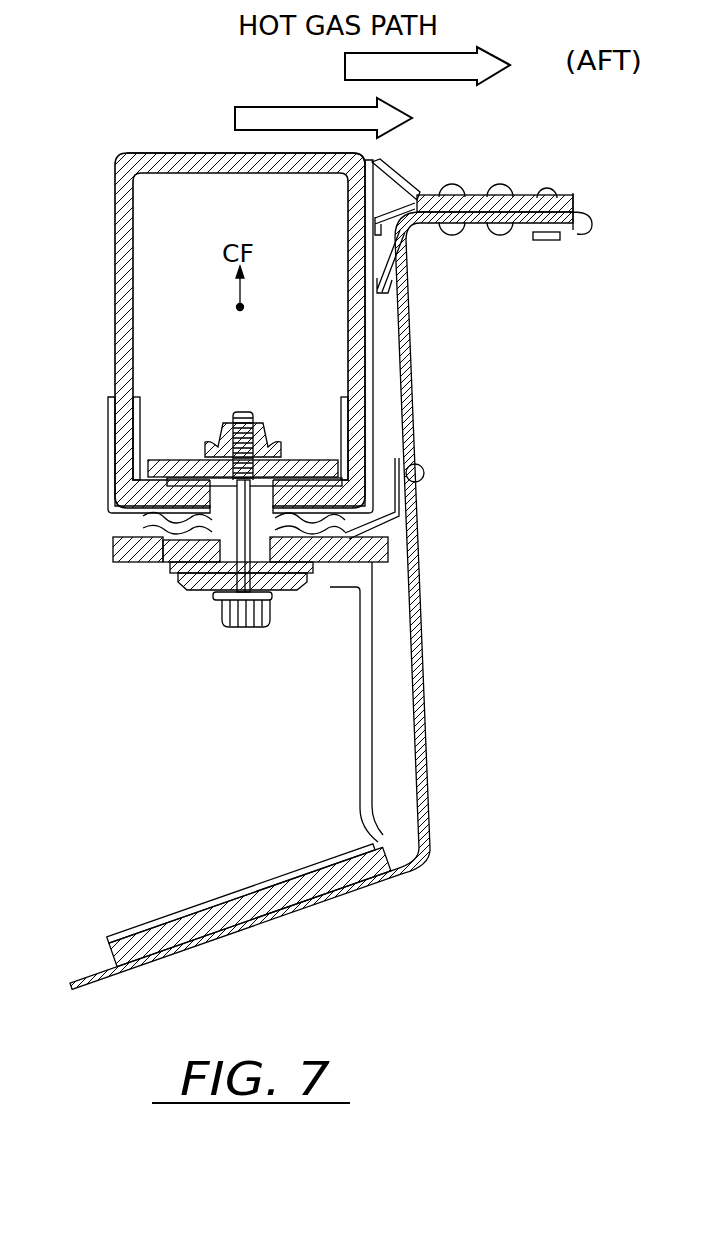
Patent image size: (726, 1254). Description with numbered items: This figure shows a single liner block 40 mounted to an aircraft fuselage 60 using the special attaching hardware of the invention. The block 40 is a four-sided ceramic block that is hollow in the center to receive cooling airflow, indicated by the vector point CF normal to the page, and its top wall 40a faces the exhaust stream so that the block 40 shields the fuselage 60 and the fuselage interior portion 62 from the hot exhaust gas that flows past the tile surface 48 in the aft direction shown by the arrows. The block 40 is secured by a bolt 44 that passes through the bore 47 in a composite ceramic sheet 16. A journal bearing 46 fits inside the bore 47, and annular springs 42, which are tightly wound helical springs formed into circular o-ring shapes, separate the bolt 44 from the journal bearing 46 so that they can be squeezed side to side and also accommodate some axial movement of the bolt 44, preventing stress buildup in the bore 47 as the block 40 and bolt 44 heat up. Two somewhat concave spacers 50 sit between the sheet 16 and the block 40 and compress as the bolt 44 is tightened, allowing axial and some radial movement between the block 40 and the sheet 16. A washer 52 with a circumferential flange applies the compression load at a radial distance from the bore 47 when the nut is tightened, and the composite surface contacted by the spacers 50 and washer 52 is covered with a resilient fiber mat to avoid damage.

The composite sheet 16 is at (163, 540).
The ceramic block 40 is at (125, 343).
The cap top wall 40a is at (185, 152).
The annular springs 42 is at (305, 583).
The bolt 44 is at (222, 592).
The journal bearing 46 is at (178, 568).
The bore 47 is at (335, 567).
The tile surface 48 is at (281, 594).
The concave spacers 50 is at (130, 523).
The washer 52 is at (190, 461).
The aircraft fuselage 60 is at (352, 741).
The fuselage interior portion 62 is at (212, 839).